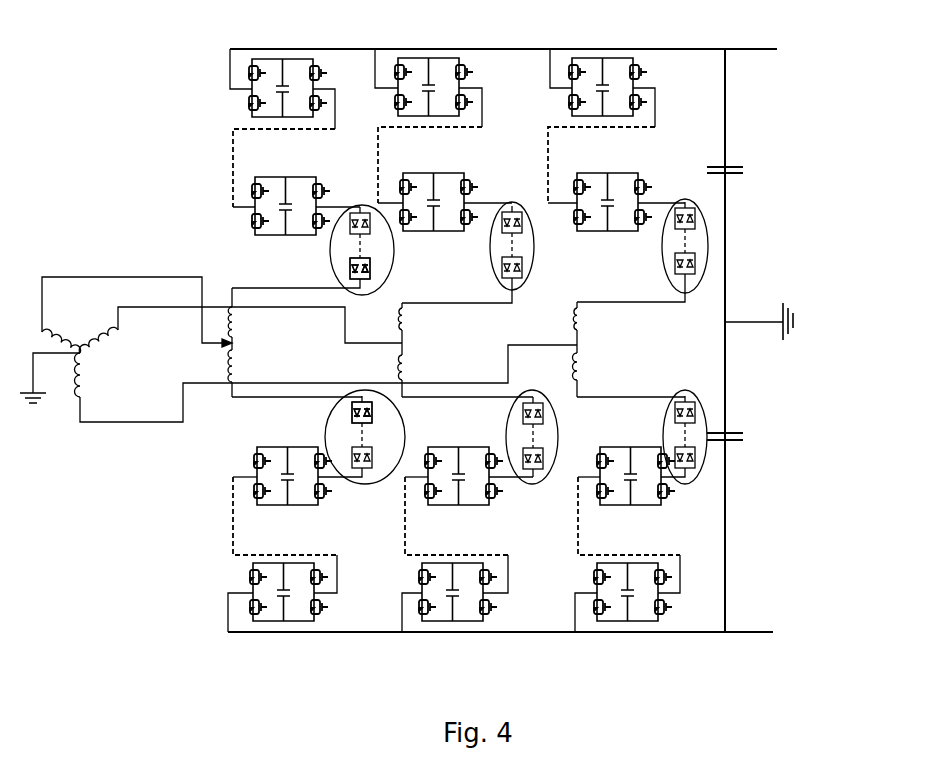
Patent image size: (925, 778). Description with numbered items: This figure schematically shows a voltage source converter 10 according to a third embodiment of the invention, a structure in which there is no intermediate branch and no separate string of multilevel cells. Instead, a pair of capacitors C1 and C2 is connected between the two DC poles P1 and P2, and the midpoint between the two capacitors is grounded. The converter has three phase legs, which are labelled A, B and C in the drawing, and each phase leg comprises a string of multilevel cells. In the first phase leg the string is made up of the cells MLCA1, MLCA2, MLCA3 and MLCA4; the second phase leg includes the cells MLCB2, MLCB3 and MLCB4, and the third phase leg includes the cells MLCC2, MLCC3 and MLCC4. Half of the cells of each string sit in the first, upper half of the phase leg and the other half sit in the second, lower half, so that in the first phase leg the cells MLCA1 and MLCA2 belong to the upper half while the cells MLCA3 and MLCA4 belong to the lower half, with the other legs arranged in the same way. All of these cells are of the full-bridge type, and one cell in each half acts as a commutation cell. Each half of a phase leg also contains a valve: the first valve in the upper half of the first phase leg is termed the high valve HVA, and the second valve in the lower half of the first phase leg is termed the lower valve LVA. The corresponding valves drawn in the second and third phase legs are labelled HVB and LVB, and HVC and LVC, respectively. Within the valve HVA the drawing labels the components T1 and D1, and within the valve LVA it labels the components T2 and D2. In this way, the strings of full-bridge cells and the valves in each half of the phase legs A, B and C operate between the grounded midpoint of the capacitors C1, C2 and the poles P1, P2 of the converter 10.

The multilevel converter system 10 is at (100, 86).
The pole P1 is at (503, 325).
The pole P2 is at (500, 630).
The capacitor C1 is at (744, 168).
The capacitor C2 is at (745, 438).
The multilevel cell MLCA1 is at (397, 73).
The multilevel cell MLCA2 is at (250, 182).
The multilevel cell MLCA3 is at (237, 476).
The multilevel cell MLCA4 is at (238, 549).
The multilevel cell MLCB2 is at (445, 179).
The multilevel cell MLCB3 is at (454, 499).
The multilevel cell MLCB4 is at (456, 571).
The multilevel cell MLCC2 is at (616, 179).
The multilevel cell MLCC3 is at (626, 499).
The multilevel cell MLCC4 is at (629, 572).
The high valve HVA is at (313, 250).
The high-voltage thyristor valve phase B HVB is at (498, 275).
The high-voltage thyristor valve phase C HVC is at (662, 268).
The lower valve LVA is at (337, 437).
The low-voltage thyristor valve phase B LVB is at (506, 437).
The low-voltage thyristor valve phase C LVC is at (700, 478).
The thyristor T1 is at (353, 269).
The diode D1 is at (376, 273).
The thyristor T2 is at (355, 412).
The diode D2 is at (380, 415).
The phase A winding A is at (240, 342).
The phase B winding B is at (409, 350).
The phase C winding C is at (589, 349).